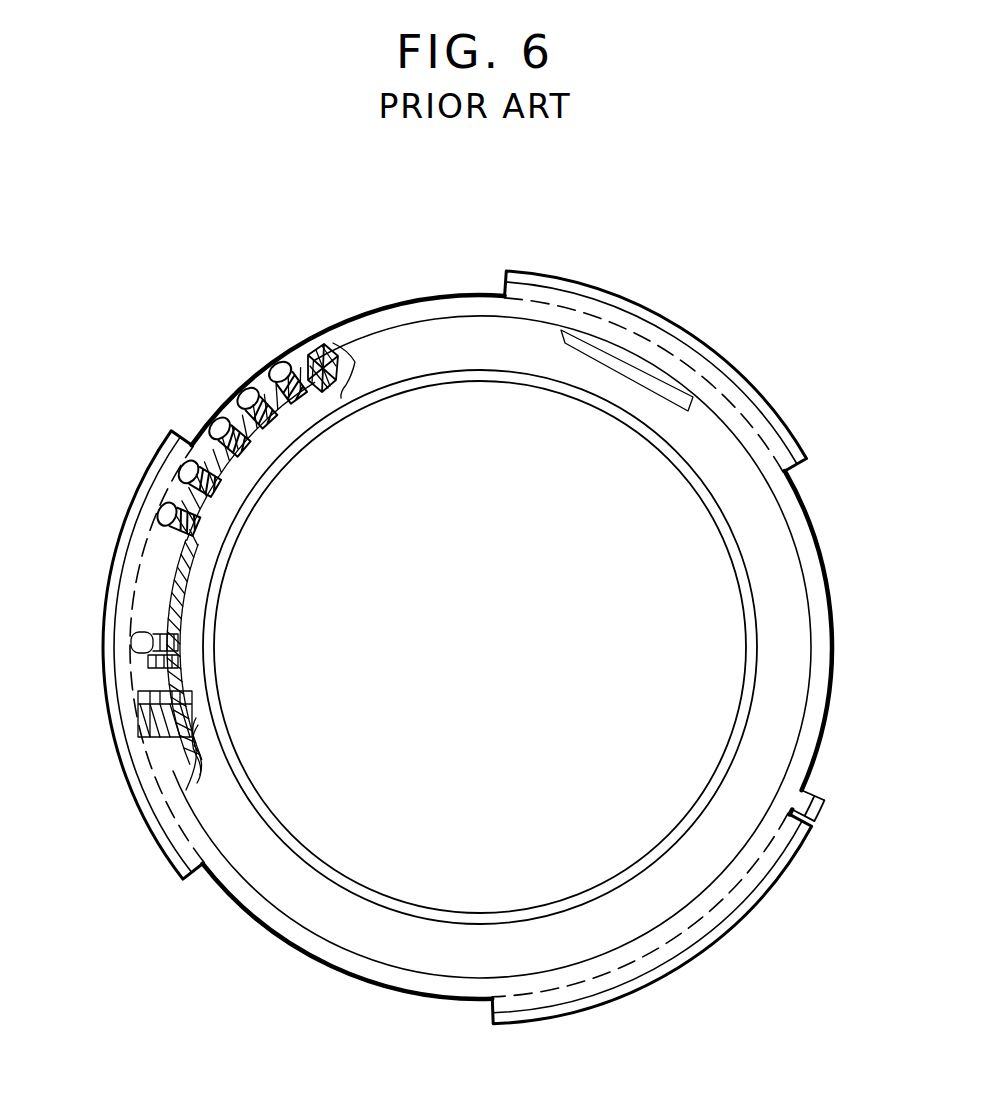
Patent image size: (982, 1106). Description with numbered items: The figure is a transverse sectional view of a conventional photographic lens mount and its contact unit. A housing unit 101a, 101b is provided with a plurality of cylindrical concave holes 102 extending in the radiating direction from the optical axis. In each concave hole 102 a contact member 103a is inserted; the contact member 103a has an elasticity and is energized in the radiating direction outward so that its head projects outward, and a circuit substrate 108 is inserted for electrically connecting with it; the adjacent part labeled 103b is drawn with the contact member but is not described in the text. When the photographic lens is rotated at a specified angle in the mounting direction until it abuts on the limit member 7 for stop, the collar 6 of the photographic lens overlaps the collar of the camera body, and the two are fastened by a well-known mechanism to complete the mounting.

The collar 6 is at (587, 313).
The limit member 7 is at (820, 808).
The housing unit 101a is at (150, 662).
The housing unit 101b is at (163, 718).
The concave hole 102 is at (172, 535).
The contact member 103a is at (217, 427).
The contact pin nut 103b is at (220, 407).
The circuit substrate 108 is at (150, 645).